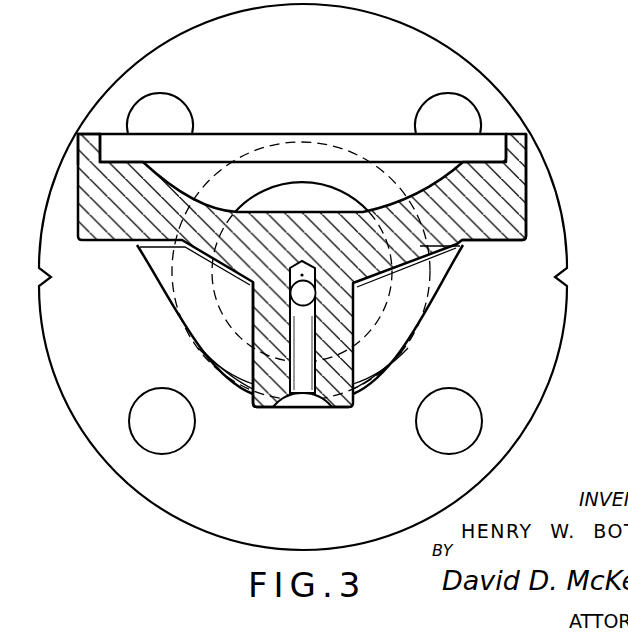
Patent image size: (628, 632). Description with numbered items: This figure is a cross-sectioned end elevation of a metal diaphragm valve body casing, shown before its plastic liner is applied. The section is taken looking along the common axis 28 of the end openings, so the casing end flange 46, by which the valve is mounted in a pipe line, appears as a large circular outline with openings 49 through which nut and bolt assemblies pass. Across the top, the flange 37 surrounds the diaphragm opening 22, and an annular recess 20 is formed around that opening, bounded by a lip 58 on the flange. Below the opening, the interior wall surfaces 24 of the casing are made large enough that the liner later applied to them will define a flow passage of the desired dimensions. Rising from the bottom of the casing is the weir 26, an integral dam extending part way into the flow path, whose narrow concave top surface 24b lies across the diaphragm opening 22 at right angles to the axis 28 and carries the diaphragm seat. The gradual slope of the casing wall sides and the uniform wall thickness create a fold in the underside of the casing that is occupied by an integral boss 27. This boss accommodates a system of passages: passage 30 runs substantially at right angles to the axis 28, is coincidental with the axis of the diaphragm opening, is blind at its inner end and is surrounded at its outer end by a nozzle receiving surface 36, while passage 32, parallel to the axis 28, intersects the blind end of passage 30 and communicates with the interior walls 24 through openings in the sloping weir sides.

The annular recess 20 is at (491, 150).
The diaphragm opening 22 is at (210, 145).
The interior wall surfaces 24 is at (403, 354).
The narrow concave top surface 24b is at (347, 207).
The weir 26 is at (273, 225).
The integral boss 27 is at (265, 376).
The common axis 28 is at (302, 275).
The passage 30 is at (291, 405).
The passage 32 is at (312, 298).
The nozzle receiving surface 36 is at (322, 406).
The flange 37 is at (511, 202).
The casing end flange 46 is at (414, 32).
The opening 49 is at (462, 106).
The lip 58 is at (88, 132).